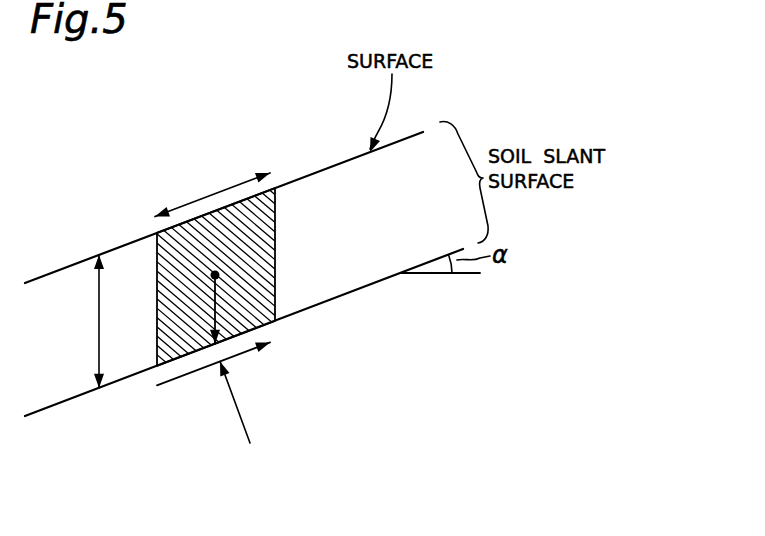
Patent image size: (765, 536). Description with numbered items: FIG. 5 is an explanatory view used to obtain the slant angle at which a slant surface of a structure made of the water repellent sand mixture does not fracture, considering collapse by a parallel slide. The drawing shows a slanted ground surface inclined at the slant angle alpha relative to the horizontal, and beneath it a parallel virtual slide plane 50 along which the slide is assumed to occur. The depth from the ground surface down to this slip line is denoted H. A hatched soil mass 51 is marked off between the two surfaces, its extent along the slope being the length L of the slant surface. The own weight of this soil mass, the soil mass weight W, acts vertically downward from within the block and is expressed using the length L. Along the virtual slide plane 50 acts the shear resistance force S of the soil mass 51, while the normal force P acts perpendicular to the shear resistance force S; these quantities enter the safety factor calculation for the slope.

The virtual slide plane 50 is at (75, 404).
The soil mass 51 is at (265, 225).
The length of slant surface L is at (212, 193).
The depth from ground surface to slip line H is at (90, 321).
The soil mass weight W is at (229, 307).
The shear resistance force S is at (195, 371).
The normal force P is at (242, 414).